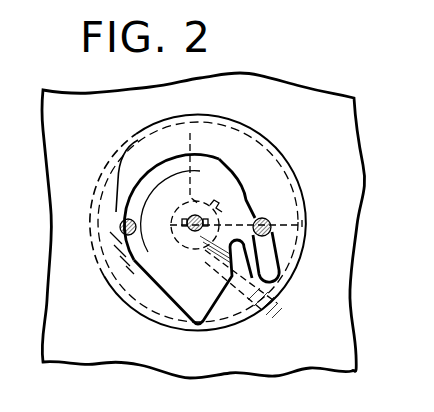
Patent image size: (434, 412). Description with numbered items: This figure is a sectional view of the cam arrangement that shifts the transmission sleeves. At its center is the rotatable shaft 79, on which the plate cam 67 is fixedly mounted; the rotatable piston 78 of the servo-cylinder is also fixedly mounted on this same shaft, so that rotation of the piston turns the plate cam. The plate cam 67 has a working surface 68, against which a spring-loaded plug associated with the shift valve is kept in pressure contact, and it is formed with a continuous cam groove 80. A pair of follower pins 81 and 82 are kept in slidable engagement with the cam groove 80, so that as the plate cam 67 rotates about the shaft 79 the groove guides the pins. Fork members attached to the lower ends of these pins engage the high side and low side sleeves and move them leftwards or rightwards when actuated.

The plate cam 67 is at (152, 305).
The working surface 68 is at (98, 239).
The rotatable piston 78 is at (262, 312).
The rotatable shaft 79 is at (200, 241).
The cam groove 80 is at (222, 158).
The follower pin 81 is at (121, 218).
The follower pin 82 is at (268, 220).